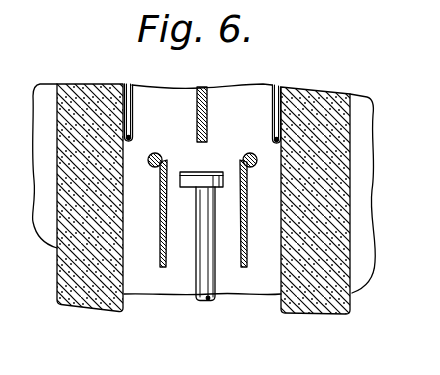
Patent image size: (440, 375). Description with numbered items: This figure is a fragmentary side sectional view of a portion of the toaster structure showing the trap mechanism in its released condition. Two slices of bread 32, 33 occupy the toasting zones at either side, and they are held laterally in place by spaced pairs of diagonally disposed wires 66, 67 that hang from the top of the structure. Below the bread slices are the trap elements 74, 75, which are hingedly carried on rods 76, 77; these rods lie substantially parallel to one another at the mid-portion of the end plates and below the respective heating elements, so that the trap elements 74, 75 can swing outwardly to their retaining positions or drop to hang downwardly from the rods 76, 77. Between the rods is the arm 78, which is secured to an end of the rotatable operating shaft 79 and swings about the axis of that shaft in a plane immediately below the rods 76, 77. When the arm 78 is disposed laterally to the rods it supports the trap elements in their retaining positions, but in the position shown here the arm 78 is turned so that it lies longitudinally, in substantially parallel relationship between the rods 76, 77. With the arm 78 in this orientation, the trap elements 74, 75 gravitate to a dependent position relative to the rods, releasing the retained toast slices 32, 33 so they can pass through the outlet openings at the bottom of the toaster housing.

The slice of bread 32 is at (72, 273).
The slice of bread 33 is at (368, 291).
The pair of diagonally disposed wires 66 is at (137, 85).
The pair of diagonally disposed wires 67 is at (273, 88).
The trap element 74 is at (161, 250).
The trap element 75 is at (247, 251).
The rod 76 is at (158, 153).
The rod 77 is at (249, 153).
The arm 78 is at (191, 179).
The rotatable operating shaft 79 is at (213, 275).